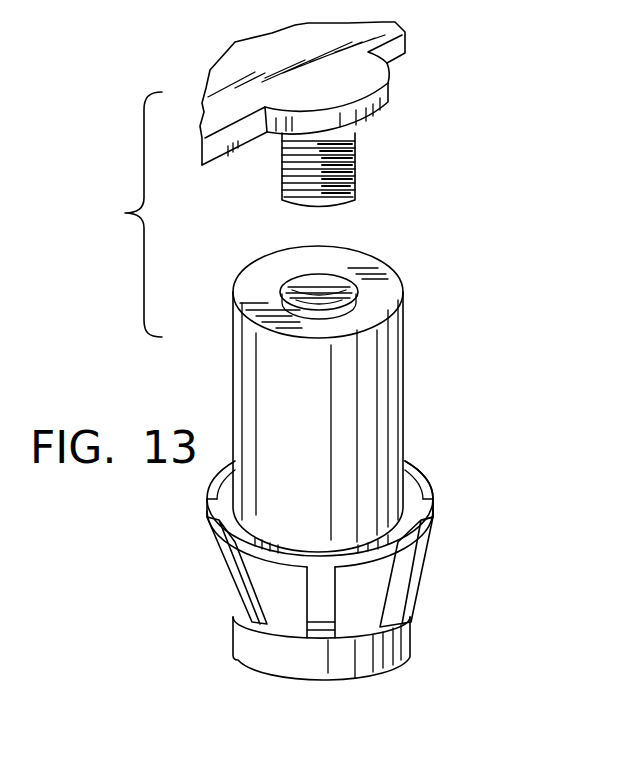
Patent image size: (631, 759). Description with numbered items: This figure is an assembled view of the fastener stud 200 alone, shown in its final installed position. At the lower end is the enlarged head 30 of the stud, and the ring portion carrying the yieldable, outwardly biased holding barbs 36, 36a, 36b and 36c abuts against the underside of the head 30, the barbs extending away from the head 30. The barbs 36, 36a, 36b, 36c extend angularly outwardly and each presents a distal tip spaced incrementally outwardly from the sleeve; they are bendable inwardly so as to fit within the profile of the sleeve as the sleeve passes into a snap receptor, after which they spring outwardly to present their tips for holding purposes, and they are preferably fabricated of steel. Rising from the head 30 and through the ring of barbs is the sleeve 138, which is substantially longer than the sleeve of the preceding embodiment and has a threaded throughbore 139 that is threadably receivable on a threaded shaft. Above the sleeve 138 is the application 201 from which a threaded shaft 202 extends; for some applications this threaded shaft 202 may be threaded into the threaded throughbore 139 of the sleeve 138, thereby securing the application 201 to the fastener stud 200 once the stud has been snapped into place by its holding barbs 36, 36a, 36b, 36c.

The stud assembly 200 is at (218, 392).
The application 201 is at (250, 48).
The threaded shaft 202 is at (285, 193).
The sleeve 138 is at (404, 392).
The threaded throughbore 139 is at (333, 280).
The holding barb 36 is at (222, 555).
The holding barb 36a is at (268, 598).
The holding barb 36b is at (377, 593).
The holding barb 36c is at (415, 558).
The head 30 is at (257, 662).